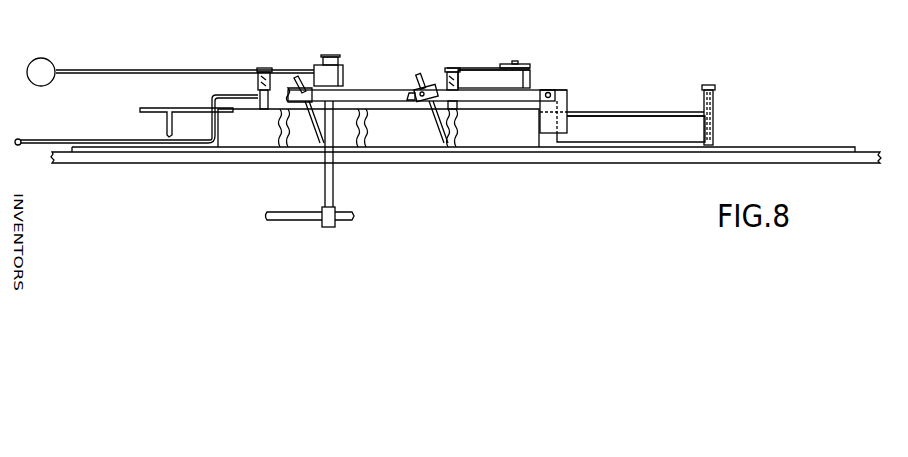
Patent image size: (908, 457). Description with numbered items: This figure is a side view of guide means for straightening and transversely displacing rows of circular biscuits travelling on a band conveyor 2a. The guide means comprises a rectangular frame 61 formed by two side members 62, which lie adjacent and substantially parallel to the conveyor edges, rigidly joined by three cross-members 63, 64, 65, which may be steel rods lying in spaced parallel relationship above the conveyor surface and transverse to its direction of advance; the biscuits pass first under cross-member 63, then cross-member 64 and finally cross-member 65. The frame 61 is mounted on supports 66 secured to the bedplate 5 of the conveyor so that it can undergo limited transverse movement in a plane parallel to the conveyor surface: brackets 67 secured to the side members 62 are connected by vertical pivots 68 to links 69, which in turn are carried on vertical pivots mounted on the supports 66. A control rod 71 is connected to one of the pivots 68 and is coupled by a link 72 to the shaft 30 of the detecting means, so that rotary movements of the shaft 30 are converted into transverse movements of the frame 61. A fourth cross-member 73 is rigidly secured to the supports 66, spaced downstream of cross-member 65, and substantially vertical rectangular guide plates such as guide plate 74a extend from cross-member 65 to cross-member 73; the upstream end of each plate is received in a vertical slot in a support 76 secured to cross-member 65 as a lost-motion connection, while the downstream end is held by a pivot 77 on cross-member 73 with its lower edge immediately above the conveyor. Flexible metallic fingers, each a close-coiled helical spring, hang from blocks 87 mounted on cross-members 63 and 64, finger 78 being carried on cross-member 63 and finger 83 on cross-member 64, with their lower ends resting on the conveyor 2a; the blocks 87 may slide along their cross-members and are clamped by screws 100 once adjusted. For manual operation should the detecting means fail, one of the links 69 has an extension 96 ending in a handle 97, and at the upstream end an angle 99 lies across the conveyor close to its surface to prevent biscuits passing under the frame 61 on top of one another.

The band conveyor 2a is at (841, 146).
The bedplate 5 is at (847, 163).
The shaft 30 is at (356, 215).
The frame 61 is at (561, 66).
The side member 62 is at (378, 88).
The cross-member 63 is at (297, 75).
The cross-member 64 is at (416, 80).
The cross-member 65 is at (568, 92).
The support 66 is at (237, 146).
The bracket 67 is at (345, 80).
The vertical pivot 68 is at (515, 62).
The link 69 is at (273, 67).
The control rod 71 is at (314, 63).
The link 72 is at (334, 192).
The fourth cross-member 73 is at (716, 96).
The guide plate 74a is at (643, 142).
The support 76 is at (575, 109).
The pivot 77 is at (716, 118).
The flexible metallic finger 78 is at (318, 144).
The flexible metallic finger 83 is at (445, 147).
The block 87 is at (427, 101).
The extension 96 is at (169, 68).
The handle 97 is at (44, 58).
The angle 99 is at (142, 113).
The screw 100 is at (413, 98).